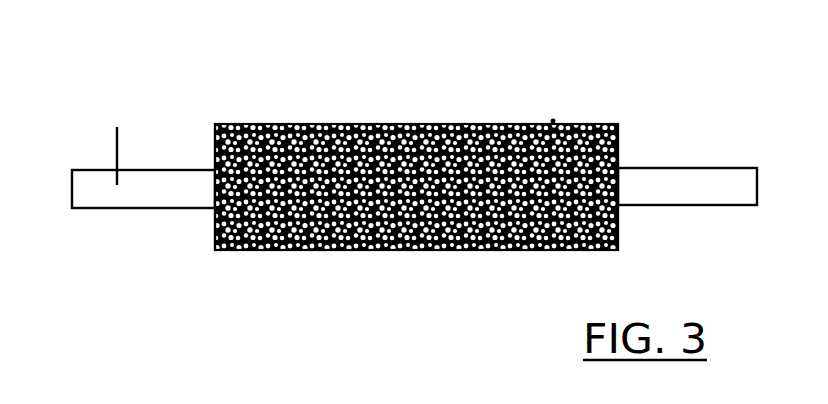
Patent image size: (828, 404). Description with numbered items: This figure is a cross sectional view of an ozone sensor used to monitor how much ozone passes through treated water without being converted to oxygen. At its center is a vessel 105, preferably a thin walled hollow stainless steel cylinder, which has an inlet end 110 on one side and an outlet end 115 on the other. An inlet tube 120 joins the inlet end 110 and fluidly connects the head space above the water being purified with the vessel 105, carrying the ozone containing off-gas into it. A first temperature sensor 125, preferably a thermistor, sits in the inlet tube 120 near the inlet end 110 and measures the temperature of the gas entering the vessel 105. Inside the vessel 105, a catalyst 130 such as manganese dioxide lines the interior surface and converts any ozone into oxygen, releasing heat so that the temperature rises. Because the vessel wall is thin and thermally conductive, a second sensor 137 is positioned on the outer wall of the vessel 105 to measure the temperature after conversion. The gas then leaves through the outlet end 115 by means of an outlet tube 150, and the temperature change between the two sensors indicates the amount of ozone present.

The vessel 105 is at (508, 250).
The inlet end 110 is at (213, 147).
The outlet end 115 is at (620, 153).
The inlet tube 120 is at (140, 210).
The first temperature sensor 125 is at (115, 145).
The catalyst 130 is at (487, 123).
The second sensor 137 is at (553, 118).
The outlet tube 150 is at (693, 198).